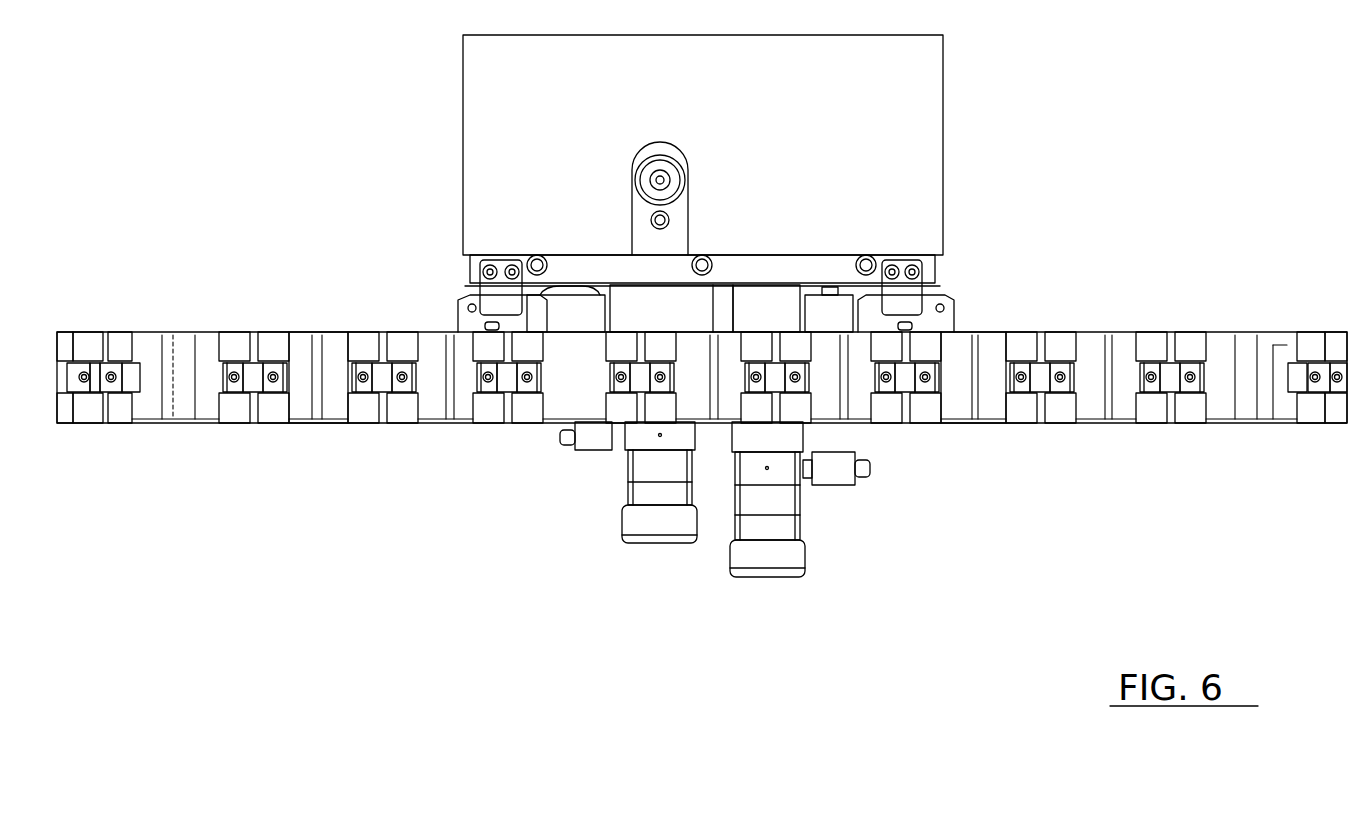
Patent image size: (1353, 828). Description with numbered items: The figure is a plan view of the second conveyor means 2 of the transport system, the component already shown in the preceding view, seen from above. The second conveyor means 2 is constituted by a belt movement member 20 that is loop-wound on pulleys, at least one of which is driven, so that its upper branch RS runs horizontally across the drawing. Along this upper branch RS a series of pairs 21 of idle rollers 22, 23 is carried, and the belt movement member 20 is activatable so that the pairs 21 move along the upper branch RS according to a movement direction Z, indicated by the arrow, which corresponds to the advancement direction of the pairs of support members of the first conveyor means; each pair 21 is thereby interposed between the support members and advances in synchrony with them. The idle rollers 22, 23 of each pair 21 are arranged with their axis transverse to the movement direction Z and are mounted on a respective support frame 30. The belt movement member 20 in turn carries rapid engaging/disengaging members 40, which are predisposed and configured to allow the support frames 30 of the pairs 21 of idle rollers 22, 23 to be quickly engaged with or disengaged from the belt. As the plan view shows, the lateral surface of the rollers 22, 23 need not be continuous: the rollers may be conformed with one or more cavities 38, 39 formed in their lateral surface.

The second conveyor means 2 is at (702, 349).
The belt movement member 20 is at (185, 345).
The pair of idle rollers 21 is at (340, 430).
The idle roller 22 is at (230, 405).
The idle roller 23 is at (277, 405).
The support frame 30 is at (200, 400).
The cavity 38 is at (484, 373).
The cavity 39 is at (550, 370).
The rapid engaging/disengaging member 40 is at (255, 380).
The upper branch RS is at (335, 345).
The movement direction Z is at (350, 318).